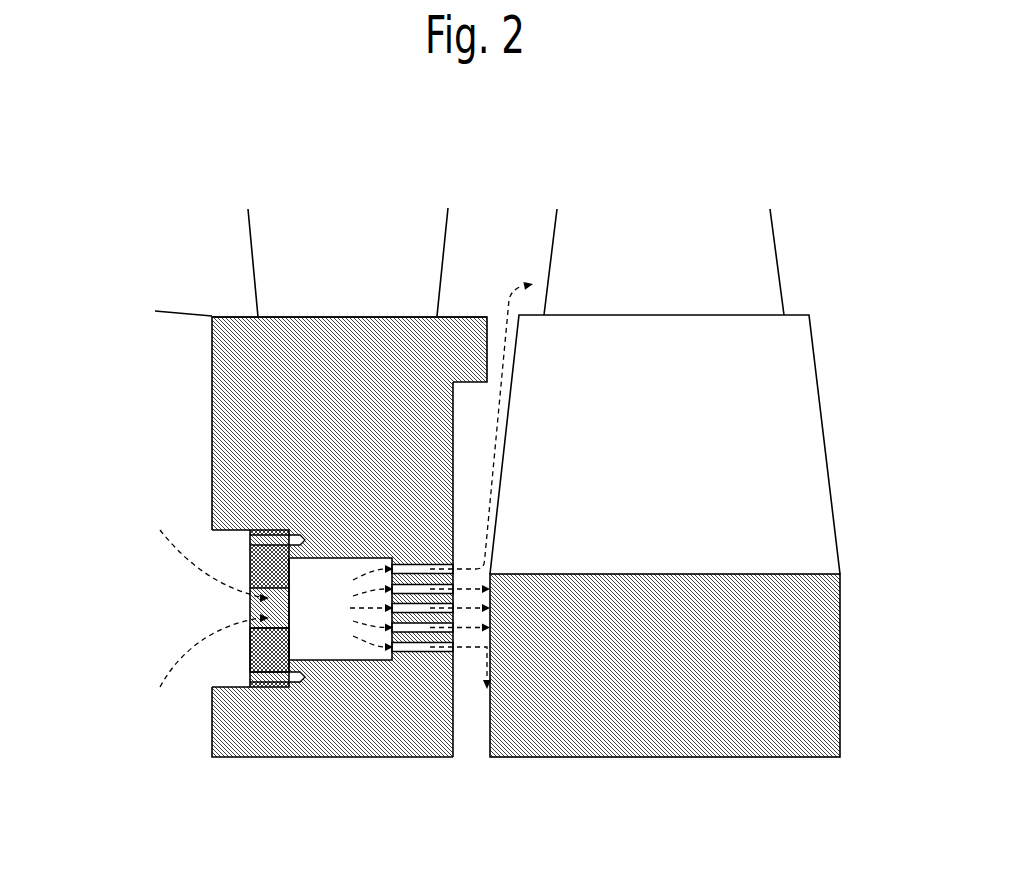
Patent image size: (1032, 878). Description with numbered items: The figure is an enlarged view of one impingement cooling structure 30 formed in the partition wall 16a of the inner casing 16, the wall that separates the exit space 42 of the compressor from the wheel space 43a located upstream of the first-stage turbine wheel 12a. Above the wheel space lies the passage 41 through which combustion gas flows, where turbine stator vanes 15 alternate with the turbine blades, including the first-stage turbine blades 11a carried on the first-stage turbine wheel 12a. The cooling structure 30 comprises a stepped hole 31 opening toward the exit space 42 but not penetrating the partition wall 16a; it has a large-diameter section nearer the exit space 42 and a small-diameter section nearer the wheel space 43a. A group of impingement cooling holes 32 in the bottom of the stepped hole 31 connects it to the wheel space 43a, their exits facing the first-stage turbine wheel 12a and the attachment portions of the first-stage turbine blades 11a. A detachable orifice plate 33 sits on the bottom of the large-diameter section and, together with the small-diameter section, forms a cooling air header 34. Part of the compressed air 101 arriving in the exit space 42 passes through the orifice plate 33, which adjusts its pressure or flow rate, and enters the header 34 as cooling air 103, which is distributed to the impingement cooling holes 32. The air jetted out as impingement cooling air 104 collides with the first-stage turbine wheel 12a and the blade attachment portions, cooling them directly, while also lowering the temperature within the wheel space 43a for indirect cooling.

The first-stage turbine blade 11a is at (760, 295).
The first-stage turbine wheel 12a is at (812, 697).
The turbine stator vane 15 is at (277, 290).
The inner casing 16 is at (197, 735).
The partition wall 16a is at (243, 343).
The impingement cooling structure 30 is at (180, 581).
The stepped hole 31 is at (250, 532).
The impingement cooling holes 32 is at (402, 645).
The orifice plate 33 is at (272, 657).
The cooling air header 34 is at (322, 640).
The passage 41 is at (510, 263).
The exit space 42 is at (157, 400).
The wheel space 43a is at (465, 437).
The compressed air 101 is at (187, 568).
The cooling air 103 is at (366, 636).
The impingement cooling air 104 is at (463, 647).